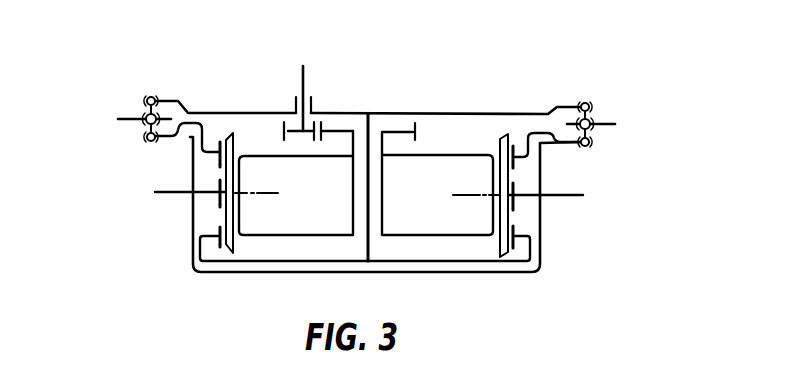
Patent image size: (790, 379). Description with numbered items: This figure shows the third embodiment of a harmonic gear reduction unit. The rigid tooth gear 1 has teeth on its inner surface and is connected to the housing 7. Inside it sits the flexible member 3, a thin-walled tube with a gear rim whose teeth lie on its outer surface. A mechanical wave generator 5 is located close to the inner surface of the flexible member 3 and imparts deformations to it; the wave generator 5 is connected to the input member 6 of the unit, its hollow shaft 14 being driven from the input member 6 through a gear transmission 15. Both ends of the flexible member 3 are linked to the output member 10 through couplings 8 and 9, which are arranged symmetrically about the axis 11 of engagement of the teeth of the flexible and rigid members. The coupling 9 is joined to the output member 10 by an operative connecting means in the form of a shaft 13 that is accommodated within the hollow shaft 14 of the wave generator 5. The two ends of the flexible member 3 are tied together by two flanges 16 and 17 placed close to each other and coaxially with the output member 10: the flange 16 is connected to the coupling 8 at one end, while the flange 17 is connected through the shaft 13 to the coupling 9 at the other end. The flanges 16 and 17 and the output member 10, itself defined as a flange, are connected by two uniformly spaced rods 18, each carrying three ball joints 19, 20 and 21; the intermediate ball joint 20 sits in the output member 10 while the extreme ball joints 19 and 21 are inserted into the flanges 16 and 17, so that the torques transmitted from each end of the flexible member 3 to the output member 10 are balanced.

The rigid tooth gear 1 is at (219, 203).
The flexible member 3 is at (238, 230).
The wave generator 5 is at (290, 227).
The input member 6 is at (302, 79).
The housing 7 is at (338, 272).
The coupling 8 is at (219, 159).
The coupling 9 is at (220, 239).
The output member 10 is at (132, 120).
The axis of engagement 11 is at (267, 192).
The shaft 13 is at (368, 150).
The shaft of the wave generator 14 is at (383, 212).
The gear transmission 15 is at (323, 121).
The flange 16 is at (540, 122).
The flange 17 is at (458, 113).
The rod 18 is at (594, 113).
The ball joint 19 is at (592, 103).
The intermediate ball joint 20 is at (594, 132).
The ball joint 21 is at (591, 147).